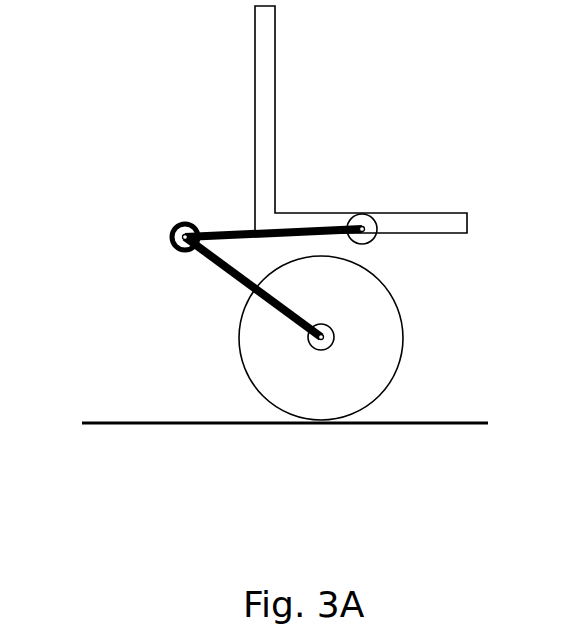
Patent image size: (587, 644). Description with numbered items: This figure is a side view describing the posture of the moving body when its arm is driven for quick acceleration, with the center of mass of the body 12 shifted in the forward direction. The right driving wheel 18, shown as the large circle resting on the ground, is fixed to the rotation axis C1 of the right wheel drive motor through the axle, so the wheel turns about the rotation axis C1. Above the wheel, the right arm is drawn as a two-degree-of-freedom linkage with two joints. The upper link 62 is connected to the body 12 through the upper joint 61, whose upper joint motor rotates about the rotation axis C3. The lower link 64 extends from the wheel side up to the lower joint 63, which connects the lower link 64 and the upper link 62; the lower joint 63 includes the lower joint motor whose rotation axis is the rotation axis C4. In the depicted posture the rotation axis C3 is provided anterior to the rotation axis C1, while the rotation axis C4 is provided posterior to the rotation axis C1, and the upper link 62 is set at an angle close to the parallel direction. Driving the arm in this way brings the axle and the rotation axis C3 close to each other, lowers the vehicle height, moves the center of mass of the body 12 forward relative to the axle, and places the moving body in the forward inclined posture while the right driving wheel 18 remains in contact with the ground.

The body 12 is at (225, 80).
The right driving wheel 18 is at (260, 393).
The upper joint 61 is at (353, 196).
The upper link 62 is at (230, 228).
The lower joint 63 is at (160, 222).
The lower link 64 is at (248, 280).
The rotation axis C1 is at (321, 337).
The rotation axis C3 is at (362, 229).
The rotation axis C4 is at (183, 237).